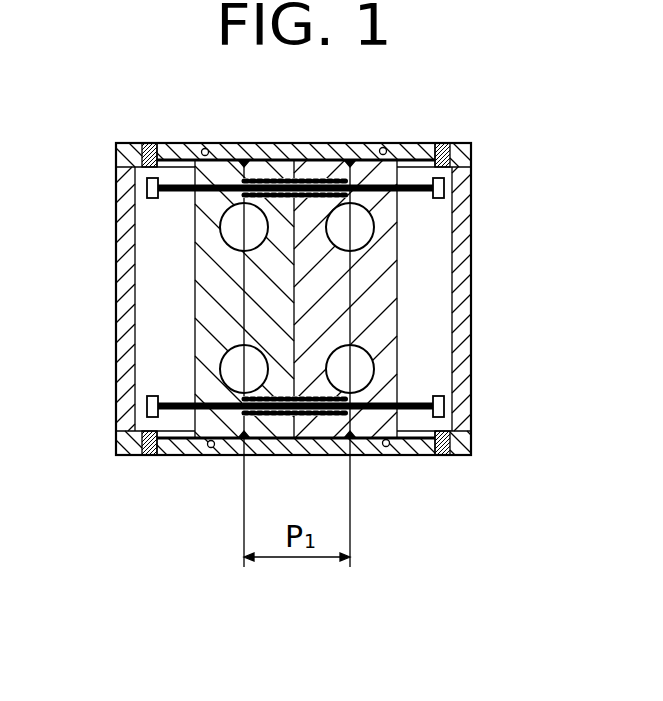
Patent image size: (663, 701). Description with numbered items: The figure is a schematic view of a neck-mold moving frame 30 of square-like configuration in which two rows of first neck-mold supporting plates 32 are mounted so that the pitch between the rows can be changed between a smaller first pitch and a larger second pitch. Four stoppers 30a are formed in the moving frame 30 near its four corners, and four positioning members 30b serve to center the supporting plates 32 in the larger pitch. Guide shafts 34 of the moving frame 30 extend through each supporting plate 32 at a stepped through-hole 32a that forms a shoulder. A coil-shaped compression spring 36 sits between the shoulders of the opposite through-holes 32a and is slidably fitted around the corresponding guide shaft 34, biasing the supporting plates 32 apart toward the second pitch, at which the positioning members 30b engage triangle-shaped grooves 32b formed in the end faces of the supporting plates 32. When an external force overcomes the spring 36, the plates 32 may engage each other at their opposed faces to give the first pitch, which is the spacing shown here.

The neck-mold moving frame 30 is at (473, 355).
The stopper 30a is at (443, 145).
The positioning member 30b is at (207, 148).
The first neck-mold supporting plate 32 is at (198, 300).
The through-hole 32a is at (265, 201).
The triangle-shaped groove 32b is at (350, 158).
The guide shaft 34 is at (415, 192).
The compression spring 36 is at (312, 439).